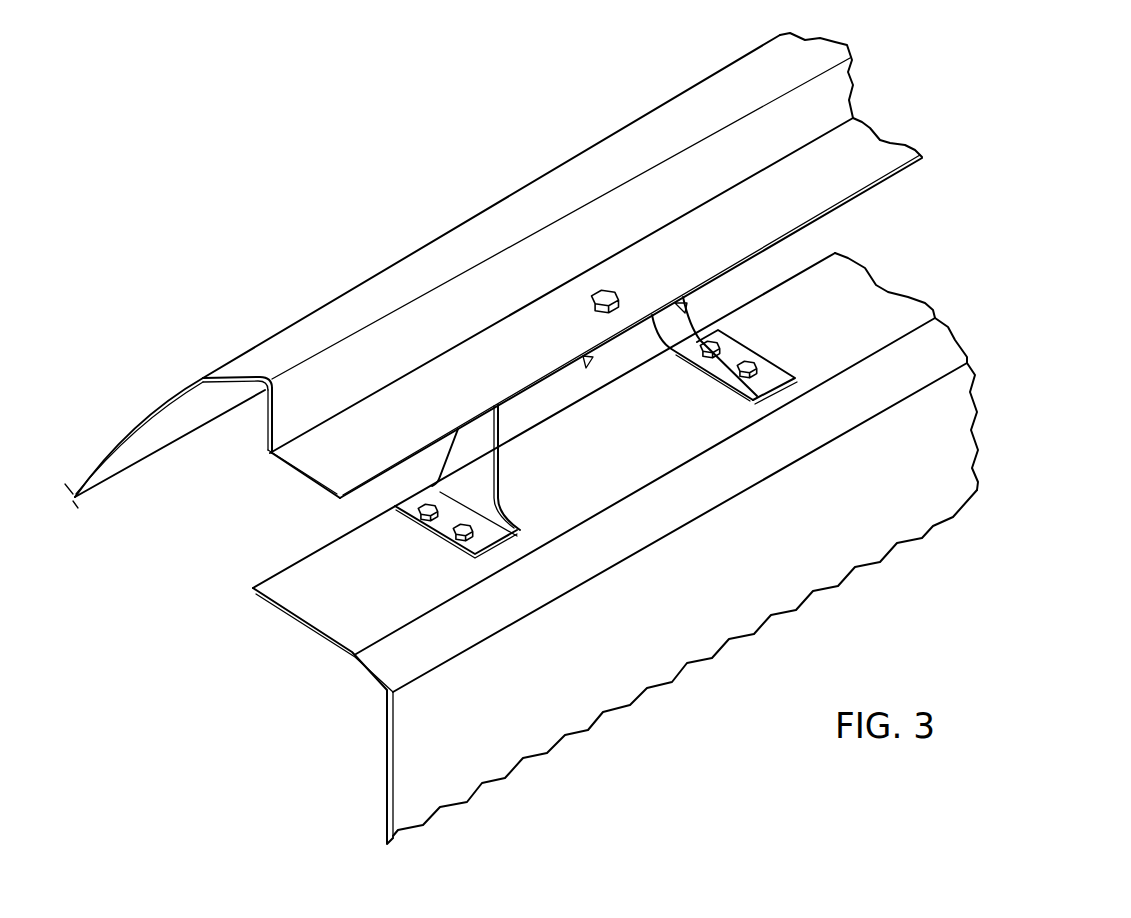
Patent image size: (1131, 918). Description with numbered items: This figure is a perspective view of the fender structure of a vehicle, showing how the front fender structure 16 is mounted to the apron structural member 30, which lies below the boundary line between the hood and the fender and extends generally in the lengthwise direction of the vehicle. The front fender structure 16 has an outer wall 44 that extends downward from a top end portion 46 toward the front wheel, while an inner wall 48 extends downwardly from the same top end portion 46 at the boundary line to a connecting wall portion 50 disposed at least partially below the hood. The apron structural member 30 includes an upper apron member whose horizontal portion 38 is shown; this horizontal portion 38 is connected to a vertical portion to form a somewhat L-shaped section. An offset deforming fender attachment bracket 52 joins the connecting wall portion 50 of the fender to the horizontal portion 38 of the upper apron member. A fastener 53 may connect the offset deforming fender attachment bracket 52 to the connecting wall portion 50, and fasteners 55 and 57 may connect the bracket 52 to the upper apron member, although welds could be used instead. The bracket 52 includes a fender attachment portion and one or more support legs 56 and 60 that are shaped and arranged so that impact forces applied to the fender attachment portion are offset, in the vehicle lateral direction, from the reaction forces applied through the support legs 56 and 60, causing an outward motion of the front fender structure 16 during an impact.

The front fender structure 16 is at (382, 235).
The apron structural member 30 is at (1018, 395).
The horizontal portion 38 is at (902, 313).
The outer wall 44 is at (135, 422).
The top end portion 46 is at (257, 353).
The inner wall 48 is at (286, 413).
The connecting wall portion 50 is at (887, 146).
The offset deforming fender attachment bracket 52 is at (773, 343).
The fastener 53 is at (620, 292).
The fastener 55 is at (422, 517).
The support leg 56 is at (550, 535).
The fastener 57 is at (460, 537).
The support leg 60 is at (783, 395).